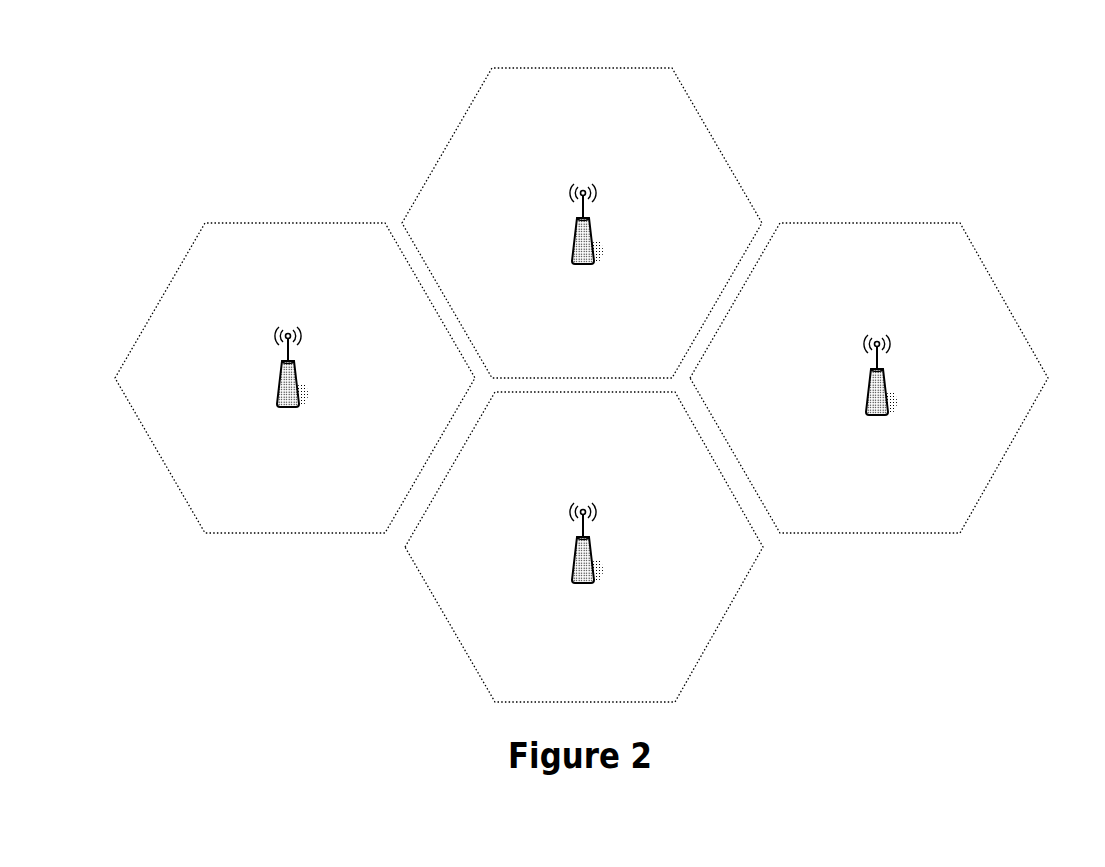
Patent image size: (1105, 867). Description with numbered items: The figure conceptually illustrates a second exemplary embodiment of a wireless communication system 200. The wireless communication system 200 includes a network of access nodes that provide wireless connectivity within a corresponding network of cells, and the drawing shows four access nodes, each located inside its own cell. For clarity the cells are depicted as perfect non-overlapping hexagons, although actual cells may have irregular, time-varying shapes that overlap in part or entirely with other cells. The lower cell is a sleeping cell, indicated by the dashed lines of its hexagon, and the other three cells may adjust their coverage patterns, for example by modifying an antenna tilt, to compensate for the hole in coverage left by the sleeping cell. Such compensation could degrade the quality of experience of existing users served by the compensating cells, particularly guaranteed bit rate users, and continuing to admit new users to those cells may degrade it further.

The wireless communication system 200 is at (572, 364).